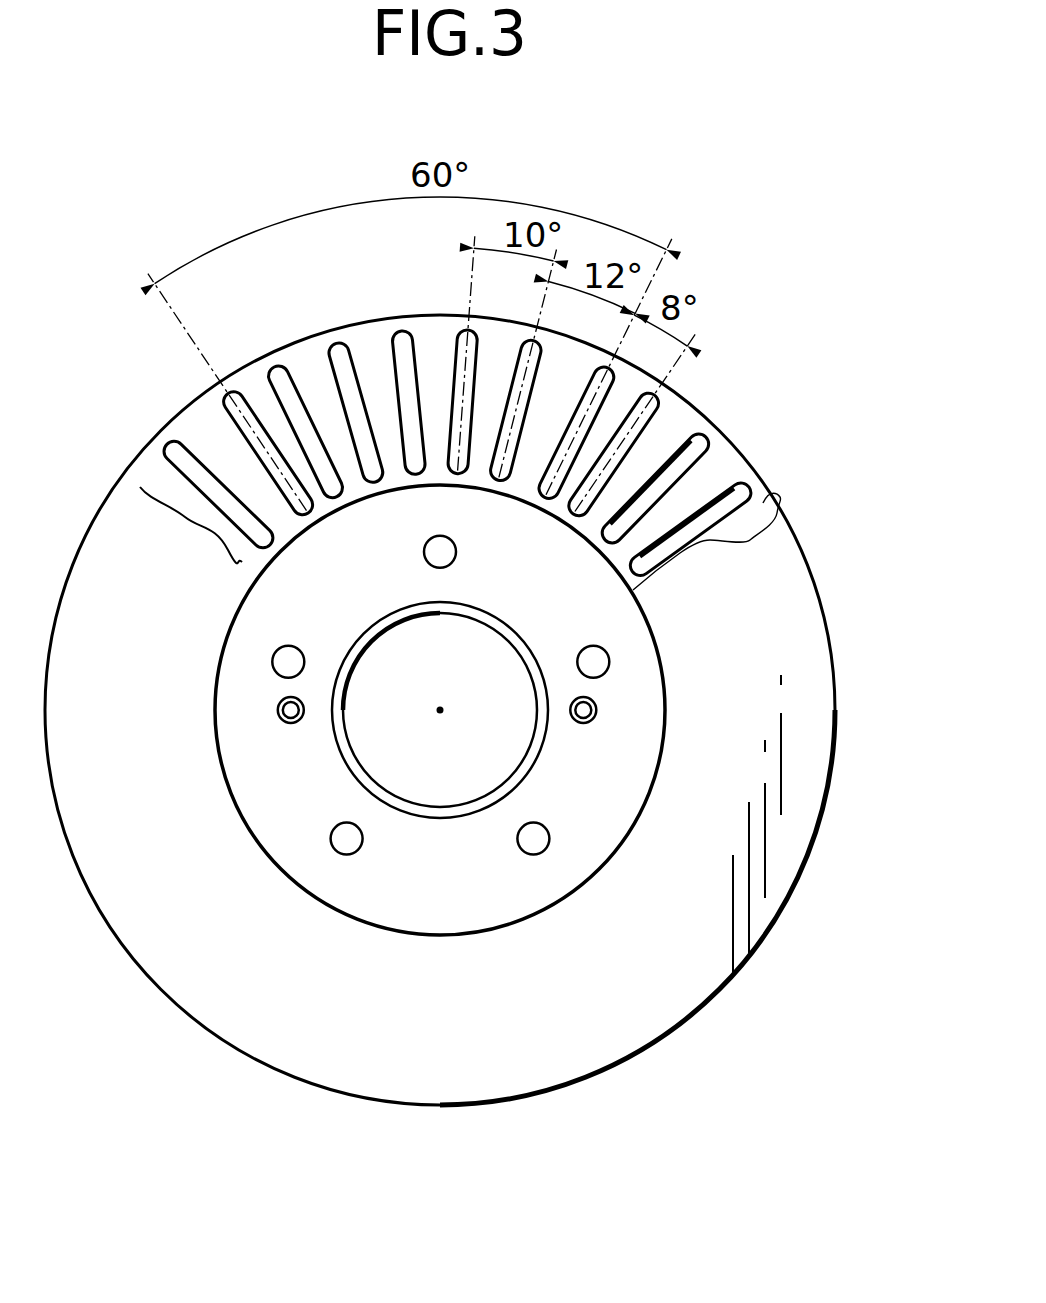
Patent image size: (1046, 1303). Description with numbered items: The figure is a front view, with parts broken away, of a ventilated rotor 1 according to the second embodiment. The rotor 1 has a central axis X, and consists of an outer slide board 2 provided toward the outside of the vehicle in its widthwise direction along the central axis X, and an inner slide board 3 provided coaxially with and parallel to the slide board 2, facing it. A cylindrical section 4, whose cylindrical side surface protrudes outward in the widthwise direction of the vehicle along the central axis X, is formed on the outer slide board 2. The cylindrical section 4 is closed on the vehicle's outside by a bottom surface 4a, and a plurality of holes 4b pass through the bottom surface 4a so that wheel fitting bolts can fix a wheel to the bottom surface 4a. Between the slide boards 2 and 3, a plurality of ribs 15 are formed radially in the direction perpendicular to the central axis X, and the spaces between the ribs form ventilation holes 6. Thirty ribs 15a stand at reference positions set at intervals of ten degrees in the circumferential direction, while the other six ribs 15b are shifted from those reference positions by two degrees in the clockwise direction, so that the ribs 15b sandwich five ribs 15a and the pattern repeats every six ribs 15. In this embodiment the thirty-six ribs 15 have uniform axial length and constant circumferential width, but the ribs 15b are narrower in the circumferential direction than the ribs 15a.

The ventilated rotor 1 is at (867, 541).
The slide board 2 is at (780, 497).
The slide board 3 is at (805, 610).
The cylindrical section 4 is at (440, 712).
The bottom surface 4a is at (460, 835).
The holes 4b is at (445, 552).
The ventilation holes 6 is at (500, 363).
The ribs 15 is at (390, 340).
The ribs 15a is at (480, 330).
The ribs 15b is at (603, 370).
The central axis X is at (447, 710).